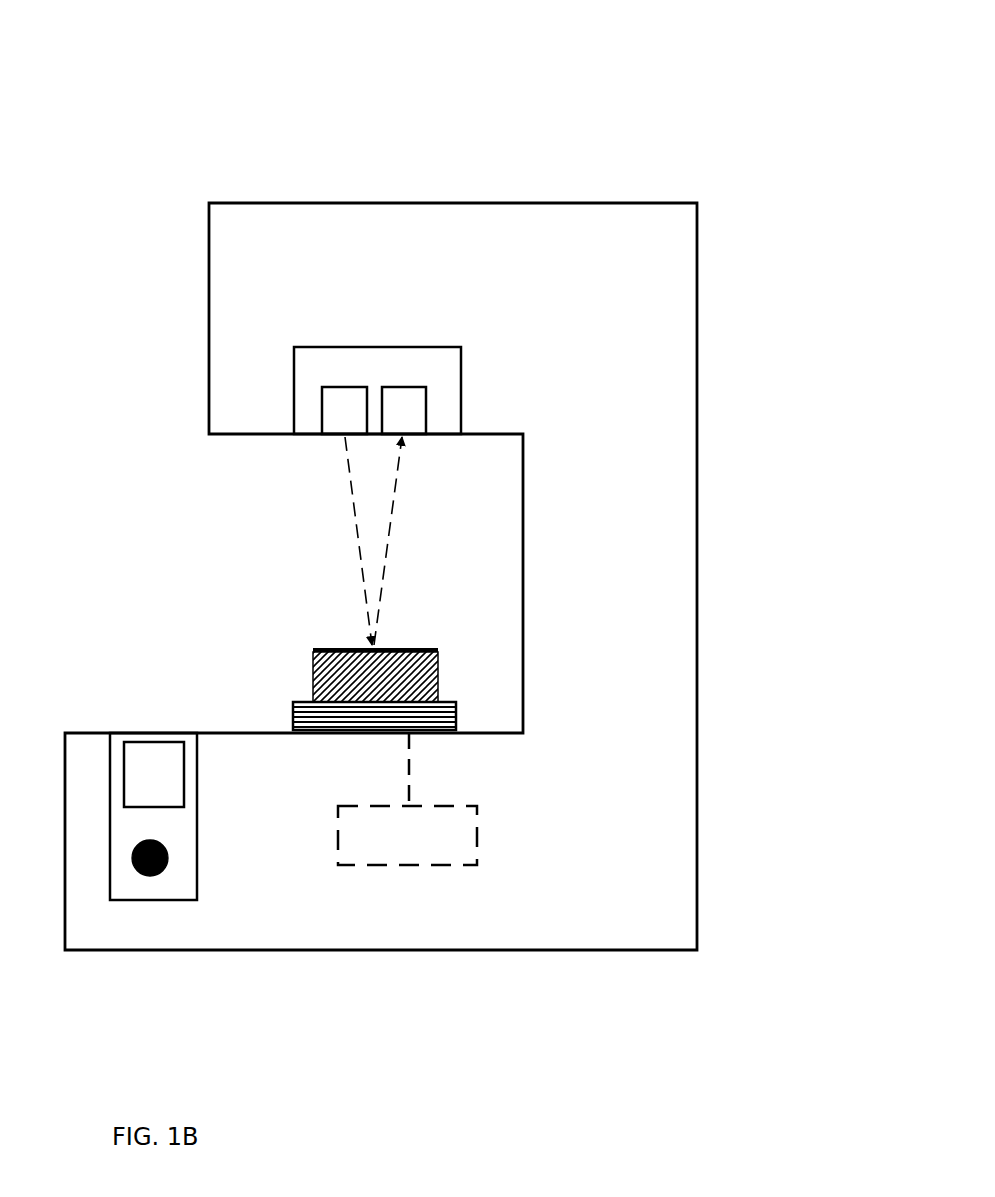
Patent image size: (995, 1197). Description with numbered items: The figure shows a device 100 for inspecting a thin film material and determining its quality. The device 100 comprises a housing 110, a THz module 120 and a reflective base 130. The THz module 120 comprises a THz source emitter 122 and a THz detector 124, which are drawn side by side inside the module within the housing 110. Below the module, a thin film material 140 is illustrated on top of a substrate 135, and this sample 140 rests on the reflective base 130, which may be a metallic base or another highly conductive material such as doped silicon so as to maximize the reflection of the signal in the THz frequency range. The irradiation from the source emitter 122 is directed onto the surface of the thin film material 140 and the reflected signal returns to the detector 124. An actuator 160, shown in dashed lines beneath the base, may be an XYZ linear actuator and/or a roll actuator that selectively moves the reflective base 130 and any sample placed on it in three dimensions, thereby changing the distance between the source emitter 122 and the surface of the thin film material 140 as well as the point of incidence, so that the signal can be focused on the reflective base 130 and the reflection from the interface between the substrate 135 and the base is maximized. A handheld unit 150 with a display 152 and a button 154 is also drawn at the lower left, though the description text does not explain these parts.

The device 100 is at (207, 41).
The housing 110 is at (697, 203).
The THz module 120 is at (427, 347).
The THz source emitter 122 is at (322, 387).
The THz detector 124 is at (426, 387).
The reflective base 130 is at (293, 713).
The substrate 135 is at (313, 687).
The thin film material 140 is at (323, 650).
The handheld controller 150 is at (110, 782).
The display 152 is at (184, 793).
The button 154 is at (168, 855).
The actuator 160 is at (473, 803).